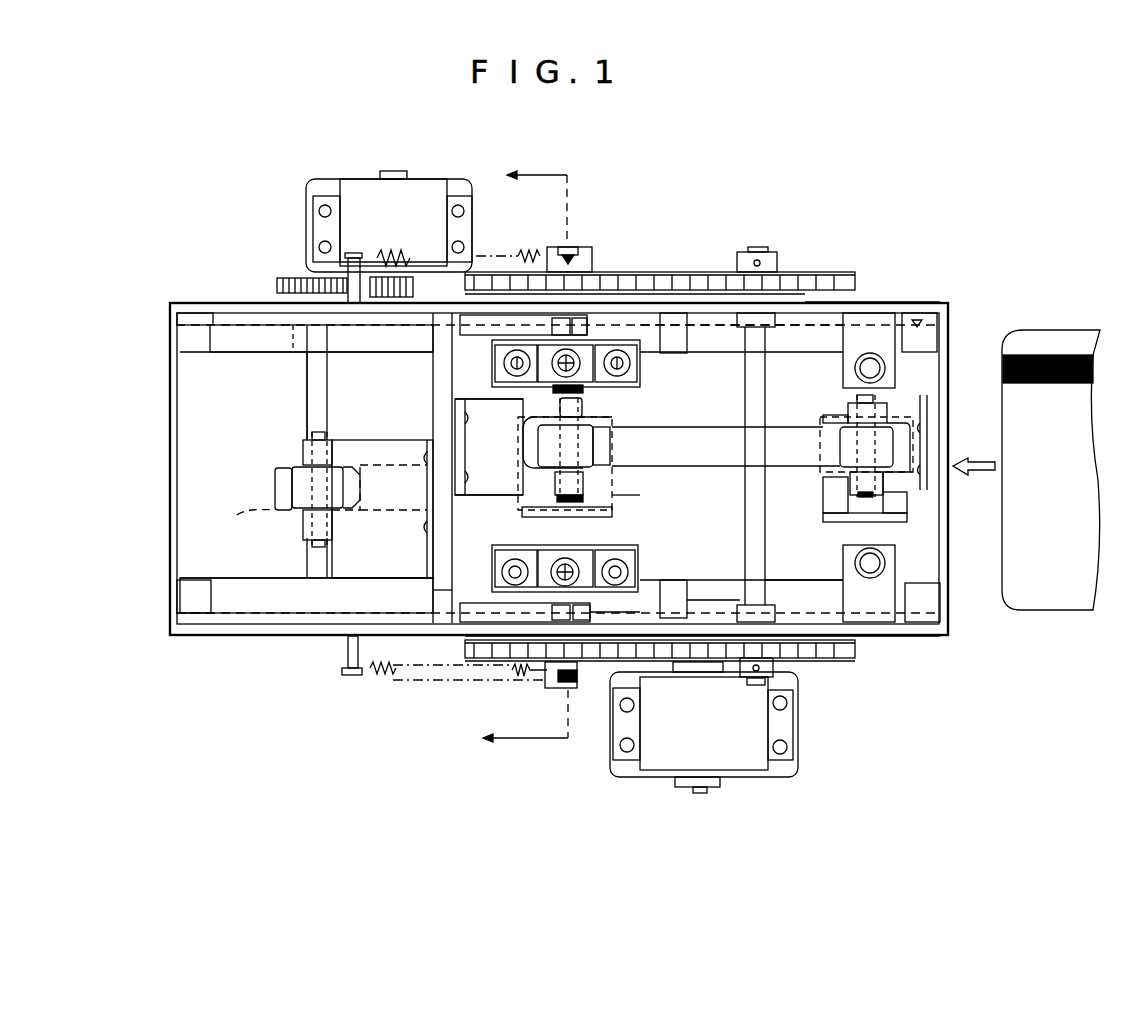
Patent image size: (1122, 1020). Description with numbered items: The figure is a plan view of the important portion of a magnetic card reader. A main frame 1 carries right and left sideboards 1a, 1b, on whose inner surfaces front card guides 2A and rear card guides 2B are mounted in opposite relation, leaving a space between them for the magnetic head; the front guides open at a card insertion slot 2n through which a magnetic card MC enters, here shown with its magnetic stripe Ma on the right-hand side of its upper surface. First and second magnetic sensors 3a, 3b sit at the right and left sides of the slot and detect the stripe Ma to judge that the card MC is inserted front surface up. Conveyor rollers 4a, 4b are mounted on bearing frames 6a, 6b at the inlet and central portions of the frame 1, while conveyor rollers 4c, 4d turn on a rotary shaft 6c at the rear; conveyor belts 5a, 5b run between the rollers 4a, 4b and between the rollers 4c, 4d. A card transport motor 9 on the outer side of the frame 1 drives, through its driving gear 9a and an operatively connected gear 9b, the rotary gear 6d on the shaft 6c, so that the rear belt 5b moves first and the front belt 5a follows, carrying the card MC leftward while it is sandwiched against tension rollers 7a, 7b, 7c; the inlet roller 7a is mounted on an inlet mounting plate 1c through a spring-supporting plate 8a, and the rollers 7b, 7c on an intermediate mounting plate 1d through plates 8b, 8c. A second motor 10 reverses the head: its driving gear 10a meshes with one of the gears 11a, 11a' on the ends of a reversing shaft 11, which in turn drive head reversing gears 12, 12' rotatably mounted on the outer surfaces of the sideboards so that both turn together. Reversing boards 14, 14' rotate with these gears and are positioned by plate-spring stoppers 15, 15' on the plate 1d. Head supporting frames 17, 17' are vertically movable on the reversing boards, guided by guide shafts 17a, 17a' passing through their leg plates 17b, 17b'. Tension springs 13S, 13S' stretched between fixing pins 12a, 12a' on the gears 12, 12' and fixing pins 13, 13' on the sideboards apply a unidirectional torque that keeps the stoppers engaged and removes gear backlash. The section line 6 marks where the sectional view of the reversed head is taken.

The main frame 1 is at (945, 312).
The right sideboard 1a is at (878, 302).
The left sideboard 1b is at (883, 633).
The inlet mounting plate 1c is at (941, 436).
The intermediate mounting plate 1d is at (440, 600).
The front card guide 2A is at (813, 340).
The rear card guide 2B is at (283, 353).
The card insertion slot 2n is at (925, 343).
The first magnetic sensor 3a is at (872, 367).
The second magnetic sensor 3b is at (873, 572).
The conveyor roller 4a is at (817, 457).
The conveyor roller 4b is at (638, 445).
The conveyor roller 4c is at (603, 490).
The conveyor roller 4d is at (311, 508).
The front conveyor belt 5a is at (718, 470).
The rear conveyor belt 5b is at (390, 502).
The section line 6— 6 is at (528, 455).
The bearing frame 6a is at (940, 593).
The bearing frame 6b is at (613, 517).
The rotary shaft 6c is at (315, 407).
The rotary gear 6d is at (297, 284).
The inlet tension roller 7a is at (905, 402).
The intermediate tension roller 7b is at (590, 453).
The rear tension roller 7c is at (297, 470).
The spring supporting plate 8a is at (893, 480).
The spring supporting plate 8b is at (468, 408).
The spring supporting plate 8c is at (363, 465).
The card transport motor 9 is at (432, 200).
The driving gear 9a is at (393, 248).
The operatively connected gear 9b is at (347, 272).
The head reversing motor 10 is at (770, 767).
The driving gear 10a is at (663, 668).
The head reversing shaft 11 is at (752, 408).
The operatively connected gear 11a is at (820, 720).
The operatively connected gear 11a' is at (773, 218).
The head reversing gear 12 is at (551, 681).
The head reversing gear 12' is at (660, 275).
The fixing pin 12a is at (635, 690).
The fixing pin 12a' is at (635, 223).
The fixing pin 13 is at (308, 692).
The fixing pin 13' is at (278, 323).
The tension spring 13S is at (355, 705).
The tension spring 13S' is at (355, 199).
The reversing board 14 is at (748, 571).
The reversing board 14' is at (716, 247).
The positioning stopper 15 is at (581, 562).
The positioning stopper 15' is at (534, 276).
The head supporting frame 17 is at (549, 568).
The head supporting frame 17' is at (593, 276).
The guide shaft 17a is at (503, 683).
The guide shaft 17a' is at (618, 287).
The leg plate 17b is at (537, 566).
The leg plate 17b' is at (547, 369).
The magnetic card MC is at (1065, 600).
The magnetic stripe Ma is at (1045, 355).